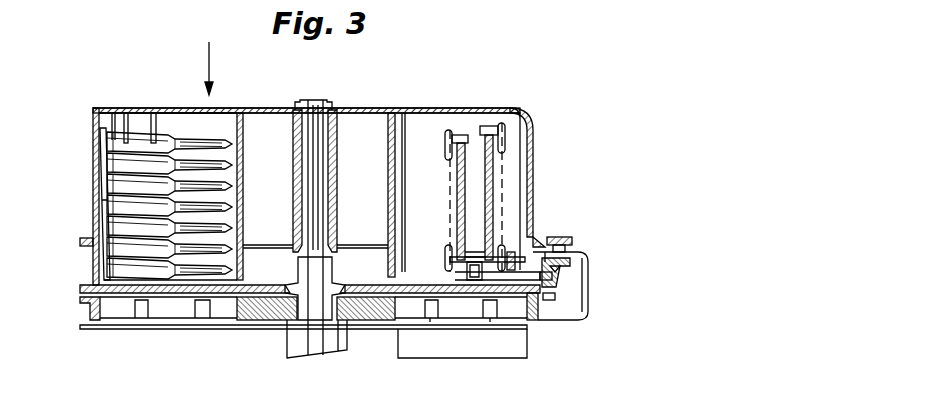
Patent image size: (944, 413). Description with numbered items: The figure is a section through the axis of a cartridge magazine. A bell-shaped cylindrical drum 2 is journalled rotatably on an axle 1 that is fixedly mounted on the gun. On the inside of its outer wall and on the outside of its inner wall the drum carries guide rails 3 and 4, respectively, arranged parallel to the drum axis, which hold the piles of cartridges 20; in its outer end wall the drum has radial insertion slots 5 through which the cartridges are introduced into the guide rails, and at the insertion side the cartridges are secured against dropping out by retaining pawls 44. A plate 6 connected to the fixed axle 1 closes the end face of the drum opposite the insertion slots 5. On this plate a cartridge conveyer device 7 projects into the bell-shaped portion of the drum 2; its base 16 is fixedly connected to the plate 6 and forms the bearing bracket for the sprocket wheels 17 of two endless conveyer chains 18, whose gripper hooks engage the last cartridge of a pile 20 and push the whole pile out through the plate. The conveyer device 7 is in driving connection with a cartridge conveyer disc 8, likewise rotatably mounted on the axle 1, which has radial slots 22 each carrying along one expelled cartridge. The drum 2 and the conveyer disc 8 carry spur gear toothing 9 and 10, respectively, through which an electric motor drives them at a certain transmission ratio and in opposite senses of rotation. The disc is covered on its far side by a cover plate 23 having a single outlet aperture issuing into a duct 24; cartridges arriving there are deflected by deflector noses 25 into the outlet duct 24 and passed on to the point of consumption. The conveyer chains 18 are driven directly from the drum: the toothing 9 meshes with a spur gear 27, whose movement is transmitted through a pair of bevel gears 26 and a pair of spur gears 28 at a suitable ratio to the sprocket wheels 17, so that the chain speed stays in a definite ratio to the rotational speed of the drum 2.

The axle 1 is at (283, 330).
The bell-shaped cylindrical drum 2 is at (364, 108).
The guide rail 3 is at (522, 140).
The guide rail 4 is at (405, 130).
The insertion slot 5 is at (136, 108).
The plate 6 is at (252, 300).
The cartridge conveyer device 7 is at (556, 298).
The cartridge conveyer disc 8 is at (540, 318).
The spur gear toothing 9 is at (82, 246).
The spur gear toothing 10 is at (85, 302).
The base 16 is at (495, 178).
The sprocket wheel 17 is at (500, 122).
The conveyer chain 18 is at (455, 225).
The pile of cartridges 20 is at (106, 205).
The radial slot 22 is at (176, 308).
The cover plate 23 is at (120, 329).
The outlet duct 24 is at (436, 340).
The deflector nose 25 is at (512, 323).
The pair of bevel gears 26 is at (550, 280).
The spur gear 27 is at (569, 238).
The pair of spur gears 28 is at (578, 251).
The retaining pawl 44 is at (157, 117).